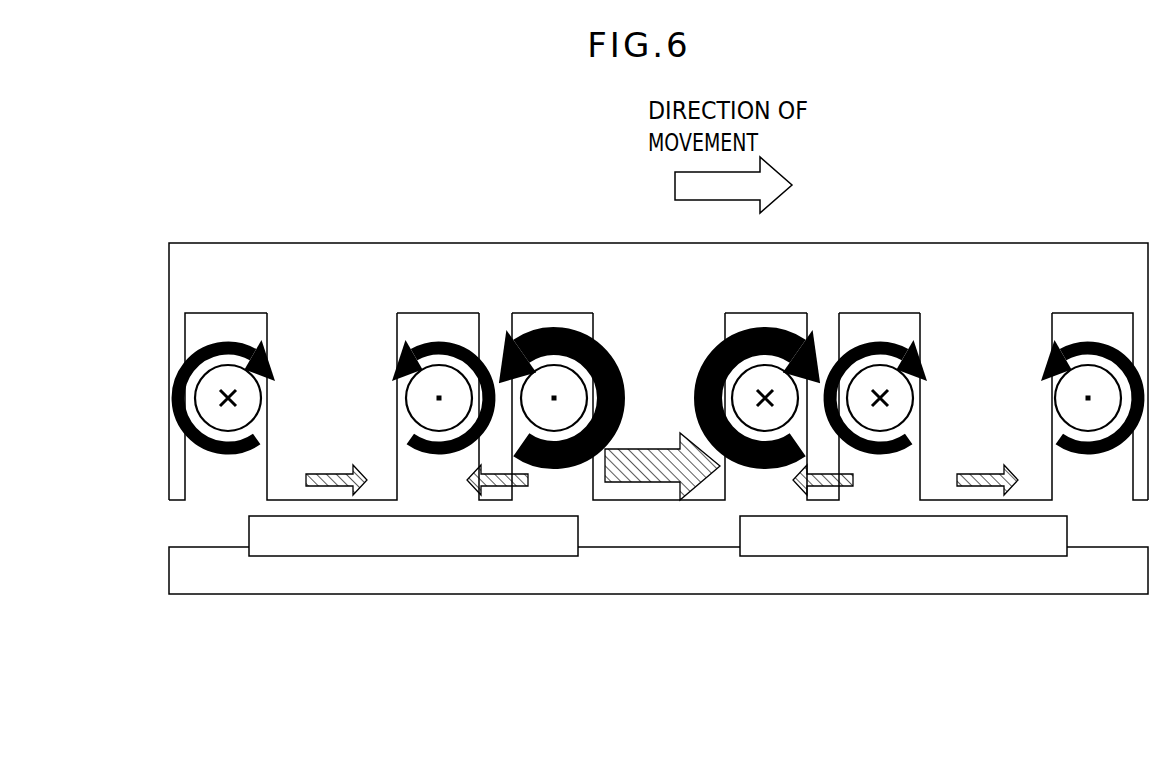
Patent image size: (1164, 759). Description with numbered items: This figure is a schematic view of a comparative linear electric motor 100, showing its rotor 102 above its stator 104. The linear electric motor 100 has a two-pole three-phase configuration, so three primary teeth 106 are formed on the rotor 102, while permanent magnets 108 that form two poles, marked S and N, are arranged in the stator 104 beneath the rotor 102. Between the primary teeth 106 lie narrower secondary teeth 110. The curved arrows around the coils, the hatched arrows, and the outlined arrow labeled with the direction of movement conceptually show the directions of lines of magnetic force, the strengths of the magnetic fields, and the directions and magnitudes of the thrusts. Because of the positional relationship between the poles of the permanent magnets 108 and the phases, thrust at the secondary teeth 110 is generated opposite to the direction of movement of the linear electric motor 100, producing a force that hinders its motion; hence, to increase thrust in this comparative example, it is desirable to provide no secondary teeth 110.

The linear electric motor 100 is at (210, 188).
The rotor 102 is at (1072, 212).
The stator 104 is at (361, 618).
The primary teeth 106 is at (337, 412).
The permanent magnets 108 is at (500, 557).
The secondary teeth 110 is at (500, 320).